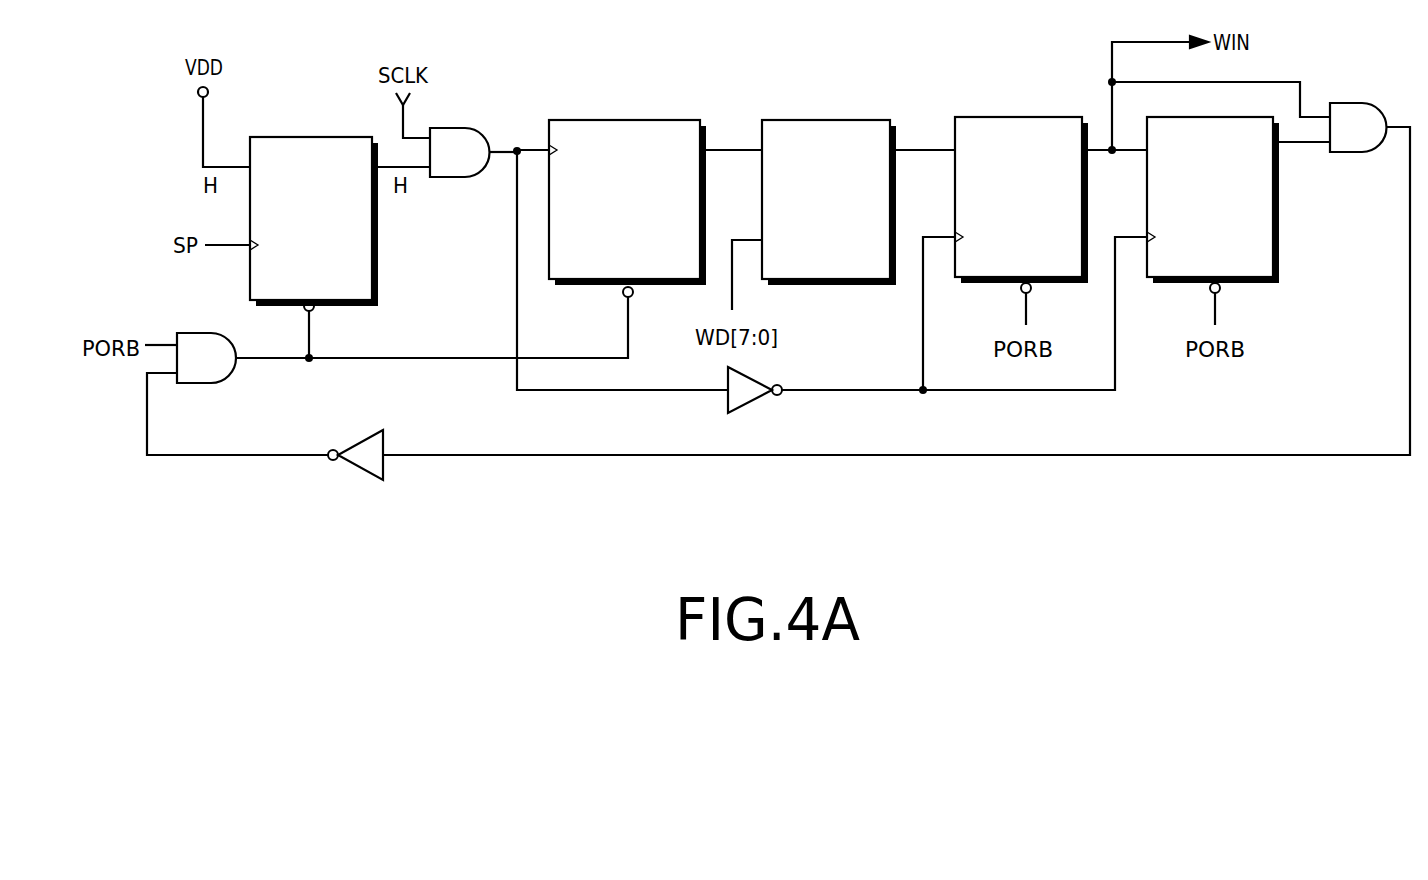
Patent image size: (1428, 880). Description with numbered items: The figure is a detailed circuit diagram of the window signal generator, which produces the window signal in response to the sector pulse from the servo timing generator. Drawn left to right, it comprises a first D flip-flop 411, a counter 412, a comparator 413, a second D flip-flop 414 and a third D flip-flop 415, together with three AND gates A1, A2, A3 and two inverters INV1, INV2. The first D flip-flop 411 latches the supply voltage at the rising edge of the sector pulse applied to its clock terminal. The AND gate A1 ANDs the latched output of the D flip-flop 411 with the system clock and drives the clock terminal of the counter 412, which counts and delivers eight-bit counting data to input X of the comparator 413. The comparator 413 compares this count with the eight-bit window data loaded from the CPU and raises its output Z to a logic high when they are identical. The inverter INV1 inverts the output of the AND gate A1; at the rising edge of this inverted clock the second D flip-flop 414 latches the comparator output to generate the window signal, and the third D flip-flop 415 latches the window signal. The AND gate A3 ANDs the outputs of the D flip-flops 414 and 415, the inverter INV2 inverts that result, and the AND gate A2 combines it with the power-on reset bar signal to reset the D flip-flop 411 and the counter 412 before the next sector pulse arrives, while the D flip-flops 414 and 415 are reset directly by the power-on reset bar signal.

The first D flip-flop 411 is at (311, 137).
The counter 412 is at (626, 120).
The comparator 413 is at (826, 120).
The second D flip-flop 414 is at (1020, 117).
The third D flip-flop 415 is at (1277, 199).
The first AND gate A1 is at (454, 128).
The second AND gate A2 is at (194, 333).
The third AND gate A3 is at (1346, 103).
The first inverter INV1 is at (752, 403).
The second inverter INV2 is at (362, 438).